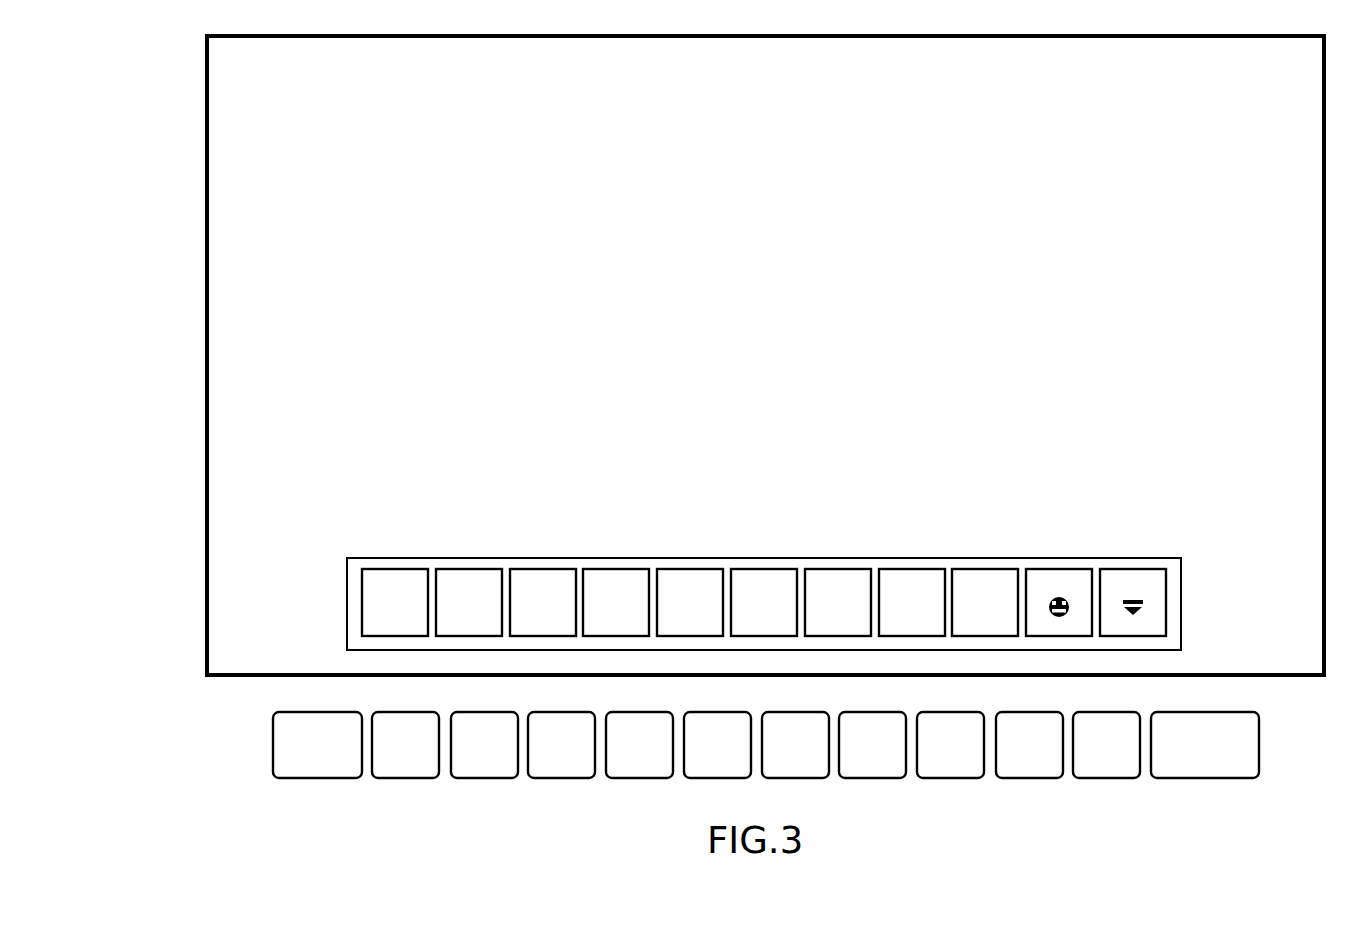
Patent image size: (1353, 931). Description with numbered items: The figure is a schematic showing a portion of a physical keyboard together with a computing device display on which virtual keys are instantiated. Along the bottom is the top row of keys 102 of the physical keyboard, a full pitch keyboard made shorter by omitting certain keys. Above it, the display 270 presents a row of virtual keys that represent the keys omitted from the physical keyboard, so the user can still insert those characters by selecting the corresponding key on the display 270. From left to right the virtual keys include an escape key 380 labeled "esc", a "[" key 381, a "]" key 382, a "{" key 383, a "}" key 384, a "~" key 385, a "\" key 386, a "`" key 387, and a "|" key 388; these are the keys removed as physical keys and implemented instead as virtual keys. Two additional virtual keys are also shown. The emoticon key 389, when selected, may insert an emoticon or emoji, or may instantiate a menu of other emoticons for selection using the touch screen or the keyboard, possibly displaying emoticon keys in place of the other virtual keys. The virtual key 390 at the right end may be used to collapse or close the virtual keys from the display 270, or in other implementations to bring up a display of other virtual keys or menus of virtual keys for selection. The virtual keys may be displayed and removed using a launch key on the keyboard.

The display 270 is at (235, 162).
The escape key 380 is at (394, 580).
The "[" key 381 is at (468, 580).
The "]" key 382 is at (542, 580).
The "{" key 383 is at (615, 580).
The "}" key 384 is at (689, 580).
The "~" key 385 is at (763, 580).
The "\" key 386 is at (837, 580).
The "`" key 387 is at (911, 580).
The "|" key 388 is at (984, 580).
The emoticon key 389 is at (1058, 580).
The virtual key 390 is at (1132, 580).
The top row of keys 102 is at (1269, 704).